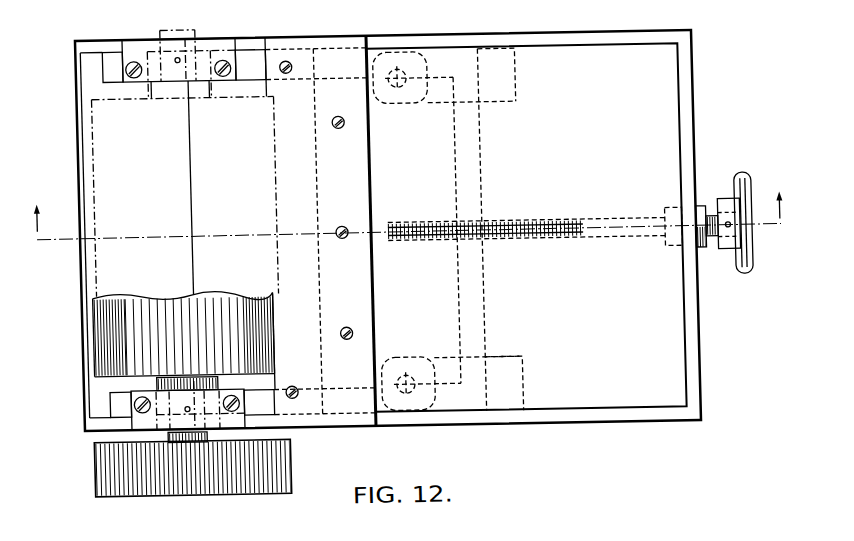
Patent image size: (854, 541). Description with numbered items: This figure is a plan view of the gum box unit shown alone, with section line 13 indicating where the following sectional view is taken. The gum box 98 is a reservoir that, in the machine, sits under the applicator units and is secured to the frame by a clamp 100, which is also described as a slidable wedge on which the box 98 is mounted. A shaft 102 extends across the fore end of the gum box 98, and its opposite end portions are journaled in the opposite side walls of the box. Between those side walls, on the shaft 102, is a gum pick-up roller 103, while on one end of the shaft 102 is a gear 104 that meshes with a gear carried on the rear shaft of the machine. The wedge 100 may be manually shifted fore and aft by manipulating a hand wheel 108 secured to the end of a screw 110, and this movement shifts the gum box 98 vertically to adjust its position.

The gum box 98 is at (560, 72).
The clamp 100 is at (512, 91).
The shaft 102 is at (173, 382).
The gum pick-up roller 103 is at (96, 325).
The gear 104 is at (101, 496).
The hand wheel 108 is at (741, 284).
The screw 110 is at (555, 227).
The section line 13- 13 is at (406, 196).